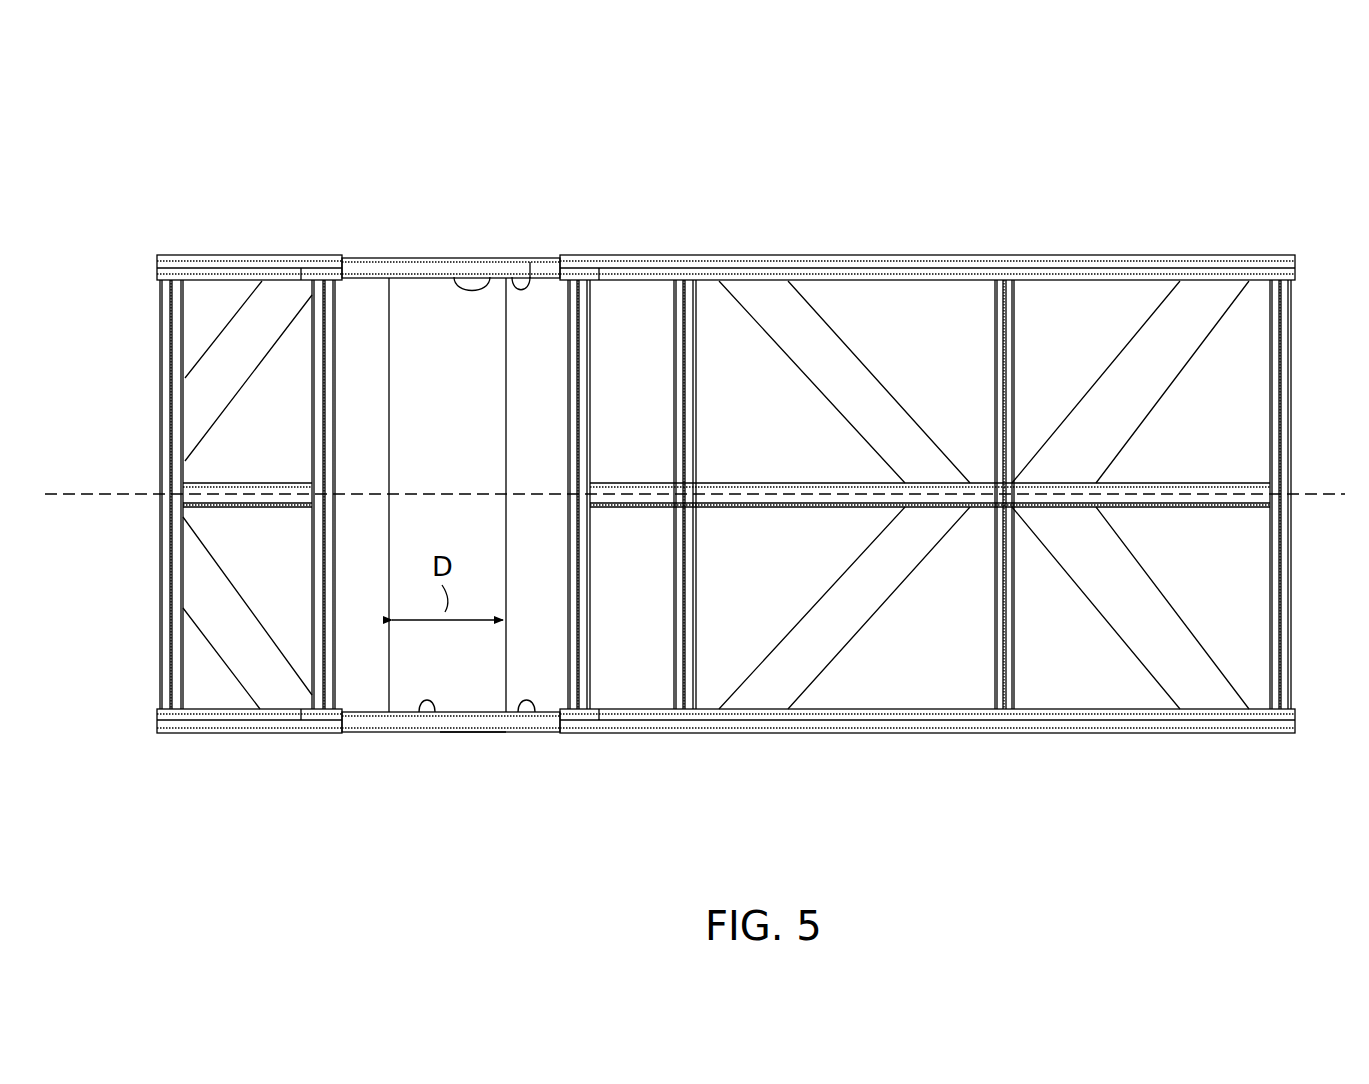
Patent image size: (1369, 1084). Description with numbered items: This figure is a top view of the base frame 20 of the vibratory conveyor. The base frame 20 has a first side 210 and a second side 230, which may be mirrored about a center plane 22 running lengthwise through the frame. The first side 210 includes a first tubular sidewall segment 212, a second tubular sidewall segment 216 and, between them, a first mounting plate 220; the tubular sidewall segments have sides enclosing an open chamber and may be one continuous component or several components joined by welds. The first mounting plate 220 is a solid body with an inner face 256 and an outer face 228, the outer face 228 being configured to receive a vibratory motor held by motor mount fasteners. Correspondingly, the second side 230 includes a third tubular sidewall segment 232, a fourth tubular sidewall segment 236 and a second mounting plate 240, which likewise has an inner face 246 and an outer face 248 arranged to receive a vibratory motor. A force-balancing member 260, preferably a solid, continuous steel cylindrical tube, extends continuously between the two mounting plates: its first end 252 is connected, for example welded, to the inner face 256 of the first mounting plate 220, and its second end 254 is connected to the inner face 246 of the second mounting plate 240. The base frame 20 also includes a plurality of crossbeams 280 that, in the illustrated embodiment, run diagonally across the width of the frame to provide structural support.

The base frame 20 is at (1210, 134).
The center plane 22 is at (1322, 497).
The first side 210 is at (899, 827).
The first tubular sidewall segment 212 is at (192, 725).
The second tubular sidewall segment 216 is at (688, 733).
The first mounting plate 220 is at (372, 718).
The outer face 228 is at (462, 733).
The second side 230 is at (1030, 118).
The third tubular sidewall segment 232 is at (172, 266).
The fourth tubular sidewall segment 236 is at (686, 268).
The second mounting plate 240 is at (377, 266).
The inner face 246 is at (533, 277).
The outer face 248 is at (497, 262).
The first end 252 is at (416, 714).
The second end 254 is at (457, 277).
The inner face 256 is at (534, 734).
The force-balancing member 260 is at (424, 322).
The crossbeams 280 is at (1092, 427).